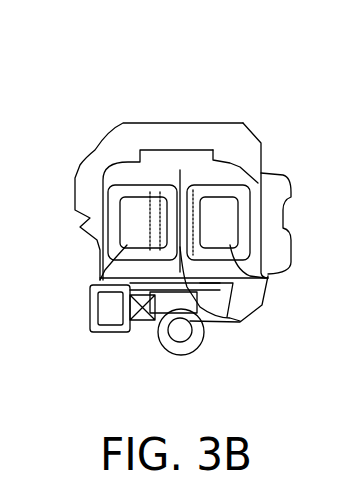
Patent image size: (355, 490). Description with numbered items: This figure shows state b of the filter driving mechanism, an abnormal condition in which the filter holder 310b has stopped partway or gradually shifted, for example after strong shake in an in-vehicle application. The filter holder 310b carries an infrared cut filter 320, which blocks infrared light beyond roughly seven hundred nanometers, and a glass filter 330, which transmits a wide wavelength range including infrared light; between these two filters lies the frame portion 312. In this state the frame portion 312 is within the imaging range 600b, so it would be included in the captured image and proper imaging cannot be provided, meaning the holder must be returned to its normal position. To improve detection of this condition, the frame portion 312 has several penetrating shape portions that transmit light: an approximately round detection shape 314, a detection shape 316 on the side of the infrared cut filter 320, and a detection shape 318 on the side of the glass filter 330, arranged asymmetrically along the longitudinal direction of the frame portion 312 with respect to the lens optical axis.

The filter holder 310b is at (135, 172).
The detection shape 314 is at (158, 147).
The imaging range 600b is at (200, 205).
The detection shape 316 is at (172, 237).
The detection shape 318 is at (180, 247).
The infrared cut filter 320 is at (100, 267).
The glass filter 330 is at (268, 276).
The frame portion 312 is at (240, 322).